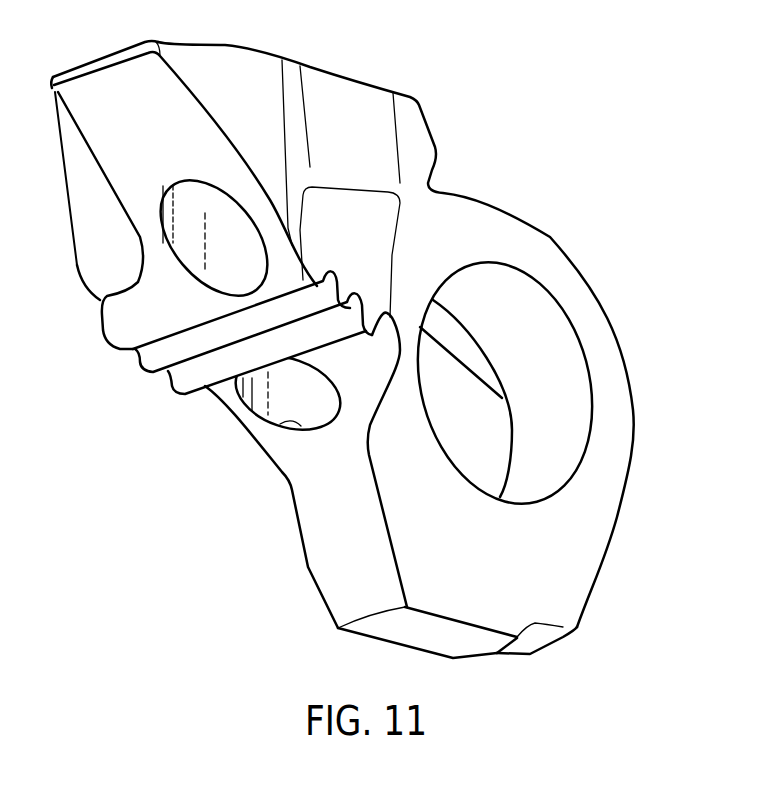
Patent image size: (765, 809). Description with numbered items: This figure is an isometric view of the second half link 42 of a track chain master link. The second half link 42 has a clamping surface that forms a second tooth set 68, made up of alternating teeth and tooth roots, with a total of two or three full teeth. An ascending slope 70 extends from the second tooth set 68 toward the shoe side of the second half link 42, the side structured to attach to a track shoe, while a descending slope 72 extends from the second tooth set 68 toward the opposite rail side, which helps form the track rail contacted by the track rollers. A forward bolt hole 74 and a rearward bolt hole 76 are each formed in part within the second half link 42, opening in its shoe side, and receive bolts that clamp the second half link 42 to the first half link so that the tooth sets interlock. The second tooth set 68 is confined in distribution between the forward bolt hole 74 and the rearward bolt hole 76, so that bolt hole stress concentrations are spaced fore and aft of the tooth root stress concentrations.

The second half link 42 is at (577, 628).
The second tooth set 68 is at (133, 371).
The ascending slope 70 is at (228, 158).
The descending slope 72 is at (307, 525).
The forward bolt hole 74 is at (180, 264).
The rearward bolt hole 76 is at (279, 425).